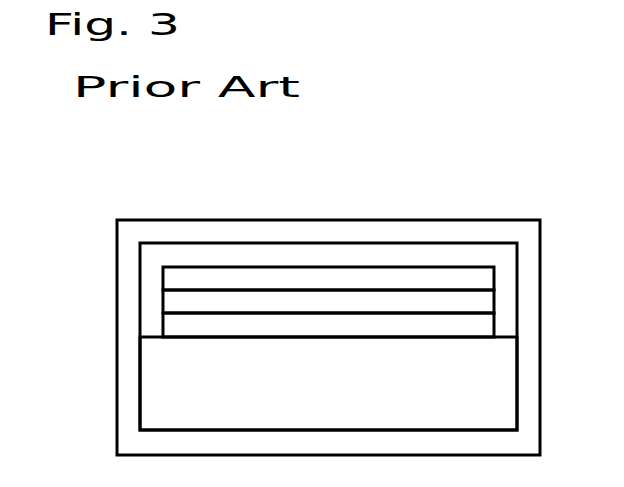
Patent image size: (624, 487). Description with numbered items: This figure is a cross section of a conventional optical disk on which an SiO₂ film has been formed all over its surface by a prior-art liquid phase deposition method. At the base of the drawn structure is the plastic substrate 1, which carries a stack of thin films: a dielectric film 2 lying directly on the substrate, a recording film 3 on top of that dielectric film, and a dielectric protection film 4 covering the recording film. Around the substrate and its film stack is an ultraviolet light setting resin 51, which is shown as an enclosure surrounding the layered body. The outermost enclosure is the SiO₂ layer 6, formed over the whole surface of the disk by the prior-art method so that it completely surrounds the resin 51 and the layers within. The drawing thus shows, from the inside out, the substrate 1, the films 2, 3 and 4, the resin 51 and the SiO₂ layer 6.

The plastic substrate 1 is at (503, 385).
The dielectric film 2 is at (485, 330).
The recording film 3 is at (485, 305).
The dielectric protection film 4 is at (485, 280).
The ultraviolet light setting resin 51 is at (483, 258).
The SiO₂ layer 6 is at (468, 233).